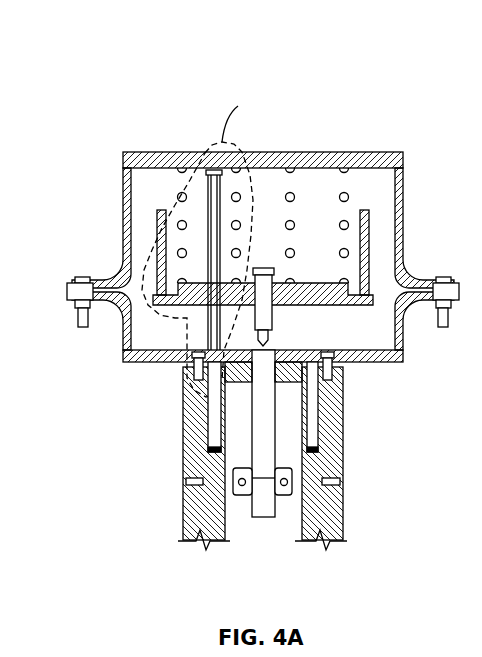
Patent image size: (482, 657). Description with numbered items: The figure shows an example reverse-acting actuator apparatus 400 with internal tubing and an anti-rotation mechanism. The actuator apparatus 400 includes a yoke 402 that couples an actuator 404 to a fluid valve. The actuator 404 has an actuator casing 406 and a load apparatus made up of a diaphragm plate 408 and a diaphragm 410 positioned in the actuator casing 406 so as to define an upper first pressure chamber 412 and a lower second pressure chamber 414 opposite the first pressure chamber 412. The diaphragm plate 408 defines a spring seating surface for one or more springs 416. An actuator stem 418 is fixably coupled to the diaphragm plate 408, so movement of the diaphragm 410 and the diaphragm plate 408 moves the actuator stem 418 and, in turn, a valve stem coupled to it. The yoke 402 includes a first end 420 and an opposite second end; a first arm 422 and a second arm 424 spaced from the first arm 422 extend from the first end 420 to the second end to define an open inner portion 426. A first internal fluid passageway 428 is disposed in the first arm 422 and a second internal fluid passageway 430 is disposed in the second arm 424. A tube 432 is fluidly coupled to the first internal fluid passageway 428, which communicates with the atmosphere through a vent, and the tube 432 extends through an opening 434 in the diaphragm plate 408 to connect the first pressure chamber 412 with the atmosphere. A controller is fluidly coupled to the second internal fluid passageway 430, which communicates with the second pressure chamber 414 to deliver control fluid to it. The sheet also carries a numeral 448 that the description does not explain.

The actuator apparatus 400 is at (148, 40).
The yoke 402 is at (142, 496).
The actuator 404 is at (104, 238).
The actuator casing 406 is at (405, 178).
The diaphragm plate 408 is at (358, 304).
The diaphragm 410 is at (372, 226).
The first pressure chamber 412 is at (335, 215).
The second pressure chamber 414 is at (331, 335).
The springs 416 is at (347, 195).
The actuator stem 418 is at (265, 398).
The first end 420 is at (346, 366).
The first arm 422 is at (192, 515).
The second arm 424 is at (325, 503).
The open inner portion 426 is at (284, 548).
The first internal fluid passageway 428 is at (212, 443).
The second internal fluid passageway 430 is at (312, 424).
The tube 432 is at (212, 190).
The opening 434 is at (152, 364).
The base 448 is at (481, 560).